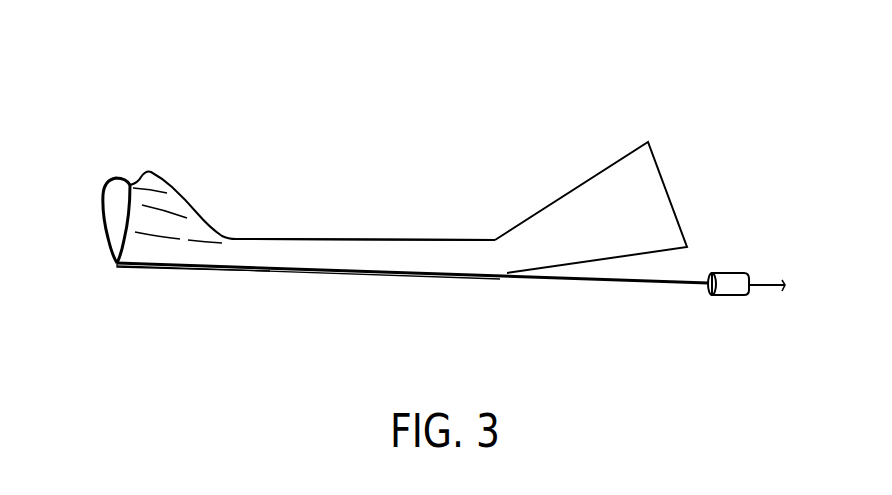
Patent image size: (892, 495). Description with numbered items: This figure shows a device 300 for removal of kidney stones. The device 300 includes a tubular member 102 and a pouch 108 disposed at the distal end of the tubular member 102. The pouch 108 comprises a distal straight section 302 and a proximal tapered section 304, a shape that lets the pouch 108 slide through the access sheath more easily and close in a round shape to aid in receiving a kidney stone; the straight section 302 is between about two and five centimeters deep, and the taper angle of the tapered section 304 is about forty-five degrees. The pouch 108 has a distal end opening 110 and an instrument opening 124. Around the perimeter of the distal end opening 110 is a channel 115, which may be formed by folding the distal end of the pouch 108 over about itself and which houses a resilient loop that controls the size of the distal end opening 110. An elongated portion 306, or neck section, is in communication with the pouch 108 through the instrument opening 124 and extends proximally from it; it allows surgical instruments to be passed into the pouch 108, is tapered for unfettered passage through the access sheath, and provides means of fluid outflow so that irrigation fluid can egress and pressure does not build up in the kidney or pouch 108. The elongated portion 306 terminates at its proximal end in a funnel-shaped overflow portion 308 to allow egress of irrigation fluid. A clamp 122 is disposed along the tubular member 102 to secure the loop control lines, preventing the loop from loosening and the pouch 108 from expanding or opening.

The device 300 is at (308, 84).
The tubular member 102 is at (585, 280).
The pouch 108 is at (130, 158).
The distal end opening 110 is at (105, 223).
The channel 115 is at (120, 240).
The clamp 122 is at (732, 283).
The instrument opening 124 is at (210, 257).
The distal straight section 302 is at (137, 247).
The proximal tapered section 304 is at (172, 203).
The elongated portion 306 is at (358, 257).
The overflow portion 308 is at (587, 212).